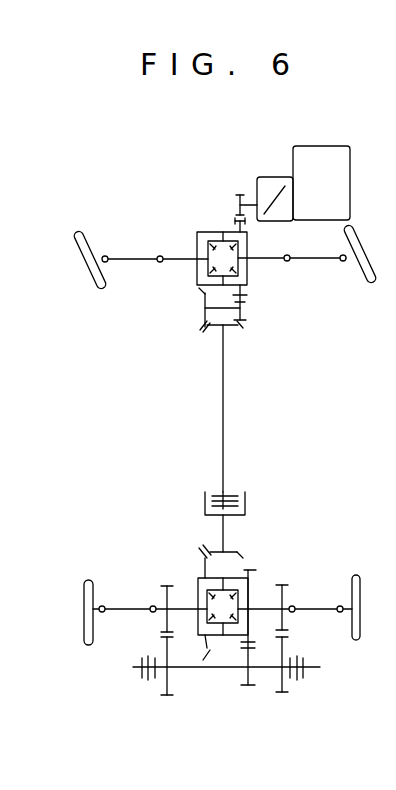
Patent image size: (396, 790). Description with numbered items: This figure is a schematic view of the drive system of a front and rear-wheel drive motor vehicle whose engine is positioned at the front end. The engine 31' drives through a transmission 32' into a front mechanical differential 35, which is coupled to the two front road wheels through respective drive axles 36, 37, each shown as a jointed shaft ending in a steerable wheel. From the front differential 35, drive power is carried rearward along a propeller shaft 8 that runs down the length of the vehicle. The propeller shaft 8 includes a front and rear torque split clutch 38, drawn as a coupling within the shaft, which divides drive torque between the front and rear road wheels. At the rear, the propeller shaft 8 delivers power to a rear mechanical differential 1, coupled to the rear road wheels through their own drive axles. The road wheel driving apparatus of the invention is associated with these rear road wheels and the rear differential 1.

The engine 31' is at (321, 159).
The transmission 32' is at (275, 175).
The mechanical differential 35 is at (197, 225).
The drive axle 36 is at (140, 262).
The drive axle 37 is at (317, 261).
The front and rear torque split clutch 38 is at (234, 482).
The propeller shaft 8 is at (222, 528).
The mechanical differential 1 is at (194, 574).